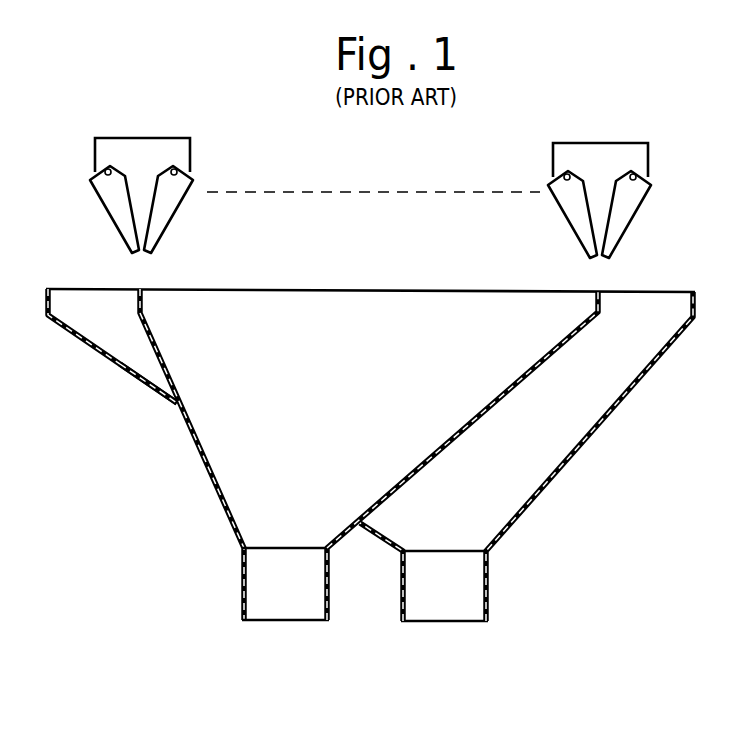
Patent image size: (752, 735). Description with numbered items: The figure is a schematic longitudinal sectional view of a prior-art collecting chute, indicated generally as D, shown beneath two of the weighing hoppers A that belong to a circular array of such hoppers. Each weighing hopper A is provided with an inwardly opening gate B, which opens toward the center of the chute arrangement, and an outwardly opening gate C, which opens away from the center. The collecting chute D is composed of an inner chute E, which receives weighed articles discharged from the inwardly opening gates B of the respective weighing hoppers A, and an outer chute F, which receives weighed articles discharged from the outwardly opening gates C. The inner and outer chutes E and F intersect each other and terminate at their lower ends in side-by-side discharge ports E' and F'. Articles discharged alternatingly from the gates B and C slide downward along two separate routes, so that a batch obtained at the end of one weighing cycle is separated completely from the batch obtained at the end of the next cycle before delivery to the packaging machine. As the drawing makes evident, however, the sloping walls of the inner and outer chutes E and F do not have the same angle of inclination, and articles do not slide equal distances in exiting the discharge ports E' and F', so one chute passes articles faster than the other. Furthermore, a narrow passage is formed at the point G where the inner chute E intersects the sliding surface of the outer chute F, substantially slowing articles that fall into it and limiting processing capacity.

The weighing hopper A is at (148, 152).
The inwardly opening gate B is at (165, 212).
The outwardly opening gate C is at (117, 213).
The collecting chute D is at (221, 521).
The inner chute E is at (192, 454).
The outer chute F is at (112, 346).
The intersection point G is at (160, 368).
The discharge port of inner chute E' is at (420, 482).
The discharge port of outer chute F' is at (526, 483).